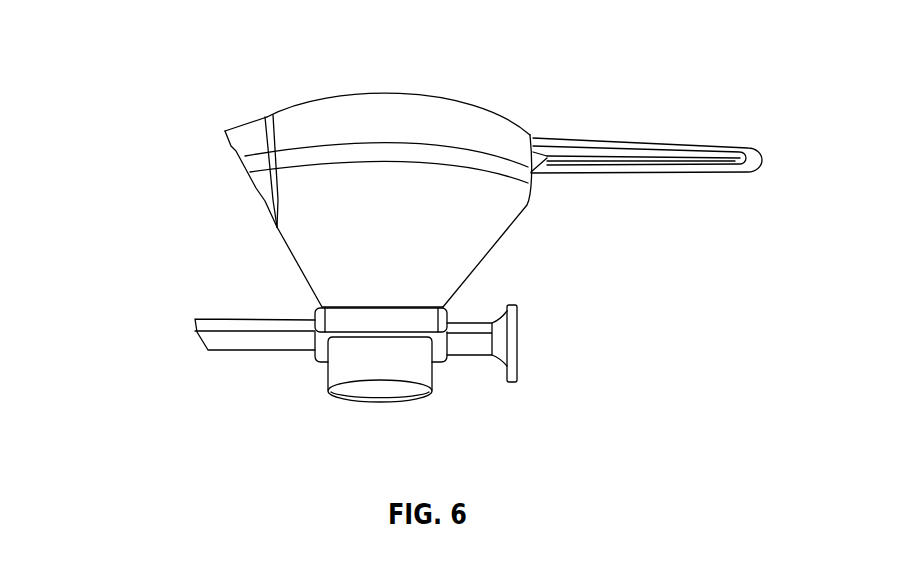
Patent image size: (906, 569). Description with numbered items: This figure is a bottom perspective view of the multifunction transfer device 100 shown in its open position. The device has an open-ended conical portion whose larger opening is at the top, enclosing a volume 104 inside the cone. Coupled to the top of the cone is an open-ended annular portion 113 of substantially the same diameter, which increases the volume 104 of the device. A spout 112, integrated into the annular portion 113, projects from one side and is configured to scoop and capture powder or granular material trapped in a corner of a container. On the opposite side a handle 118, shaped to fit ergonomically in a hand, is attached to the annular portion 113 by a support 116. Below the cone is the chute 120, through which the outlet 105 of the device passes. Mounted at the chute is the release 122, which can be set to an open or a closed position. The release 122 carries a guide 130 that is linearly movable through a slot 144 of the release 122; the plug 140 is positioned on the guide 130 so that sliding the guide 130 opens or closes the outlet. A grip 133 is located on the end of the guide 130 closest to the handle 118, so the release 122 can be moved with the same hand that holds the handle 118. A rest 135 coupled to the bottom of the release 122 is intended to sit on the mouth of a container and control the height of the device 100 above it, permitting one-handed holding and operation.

The multifunction transfer device 100 is at (140, 34).
The volume 104 is at (409, 84).
The outlet 105 is at (375, 394).
The spout 112 is at (240, 127).
The annular portion 113 is at (248, 157).
The support 116 is at (558, 162).
The handle 118 is at (657, 143).
The chute 120 is at (325, 368).
The release 122 is at (327, 313).
The guide 130 is at (522, 357).
The grip 133 is at (515, 342).
The rest 135 is at (438, 358).
The plug 140 is at (220, 342).
The slot 144 is at (468, 347).